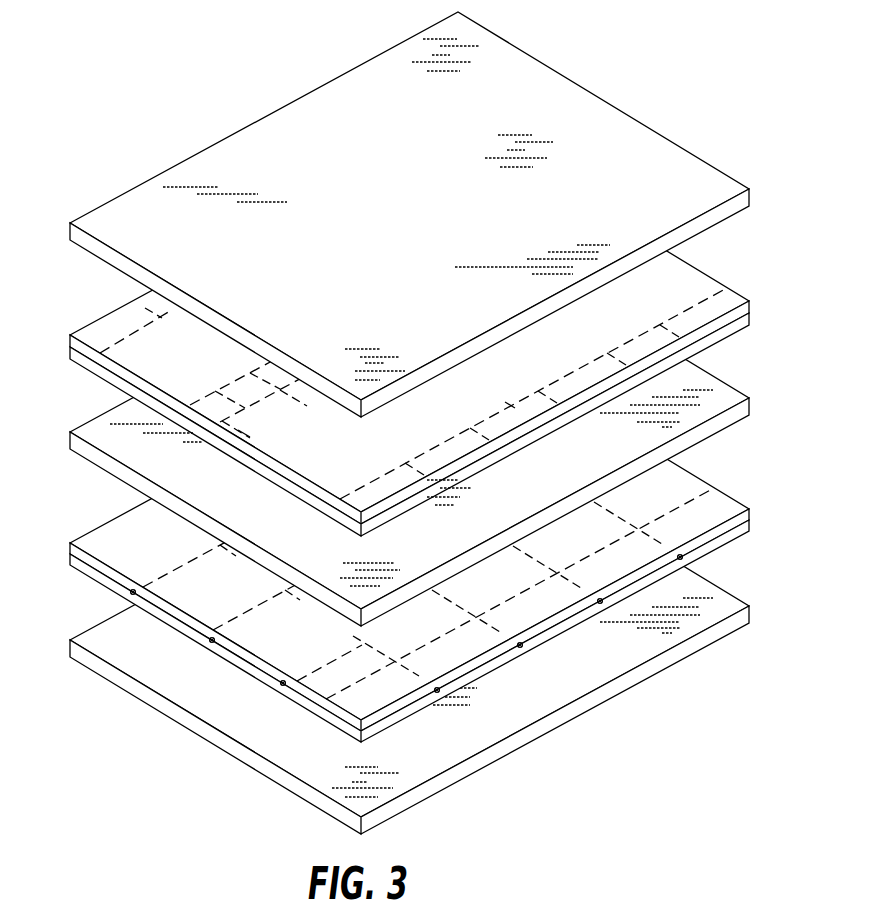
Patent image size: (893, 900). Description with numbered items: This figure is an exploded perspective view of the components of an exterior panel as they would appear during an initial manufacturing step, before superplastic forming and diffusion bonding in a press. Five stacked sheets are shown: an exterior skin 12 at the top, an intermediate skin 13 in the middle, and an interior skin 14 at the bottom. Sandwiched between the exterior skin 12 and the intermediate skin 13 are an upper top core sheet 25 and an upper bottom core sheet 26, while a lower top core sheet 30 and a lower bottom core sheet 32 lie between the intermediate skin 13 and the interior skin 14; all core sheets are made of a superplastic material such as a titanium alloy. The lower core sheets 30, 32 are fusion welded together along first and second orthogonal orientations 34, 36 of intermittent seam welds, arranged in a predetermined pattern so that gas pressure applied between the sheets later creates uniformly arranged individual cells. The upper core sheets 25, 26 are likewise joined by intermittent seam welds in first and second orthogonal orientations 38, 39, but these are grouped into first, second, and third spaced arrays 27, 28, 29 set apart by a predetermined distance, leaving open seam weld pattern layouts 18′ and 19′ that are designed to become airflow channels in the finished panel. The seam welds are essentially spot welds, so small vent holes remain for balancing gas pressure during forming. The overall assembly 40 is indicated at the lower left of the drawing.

The exterior skin 12 is at (632, 128).
The intermediate skin 13 is at (722, 386).
The interior skin 14 is at (722, 598).
The open seam weld pattern layout 18′ is at (190, 362).
The open seam weld pattern layout 19′ is at (360, 462).
The upper top core sheet 25 is at (750, 310).
The upper bottom core sheet 26 is at (750, 324).
The first spaced array of intermittent seam welds 27 is at (110, 337).
The second spaced array of intermittent seam welds 28 is at (243, 430).
The third spaced array of intermittent seam welds 29 is at (510, 406).
The lower top core sheet 30 is at (735, 510).
The lower bottom core sheet 32 is at (750, 530).
The first orthogonal orientation of intermittent seam welds 34 is at (640, 538).
The second orthogonal orientation of intermittent seam welds 36 is at (186, 571).
The first orthogonal orientation of intermittent seam welds 38 is at (148, 313).
The second orthogonal orientation of intermittent seam welds 39 is at (130, 335).
The layered assembly 40 is at (158, 899).